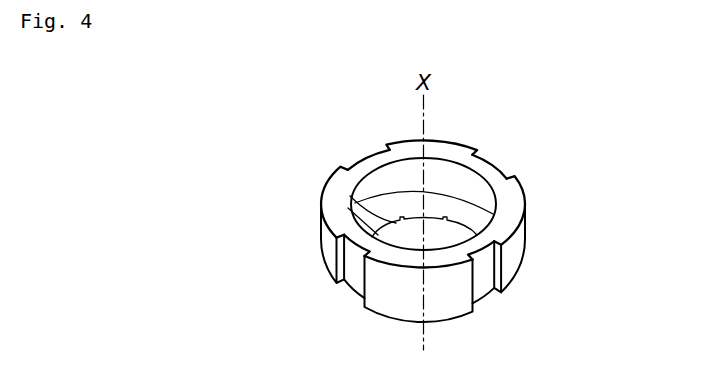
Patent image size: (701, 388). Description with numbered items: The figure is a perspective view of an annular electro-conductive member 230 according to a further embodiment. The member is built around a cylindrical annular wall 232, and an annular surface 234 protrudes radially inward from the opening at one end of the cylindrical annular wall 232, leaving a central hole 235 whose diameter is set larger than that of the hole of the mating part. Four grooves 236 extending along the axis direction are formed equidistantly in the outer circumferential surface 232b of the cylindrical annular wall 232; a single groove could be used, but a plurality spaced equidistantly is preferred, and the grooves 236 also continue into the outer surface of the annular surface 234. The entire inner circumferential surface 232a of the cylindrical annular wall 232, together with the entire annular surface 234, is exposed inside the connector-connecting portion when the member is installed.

The annular electro-conductive member 230 is at (411, 233).
The cylindrical annular wall 232 is at (508, 256).
The inner circumferential surface 232a is at (447, 167).
The outer circumferential surface 232b is at (383, 294).
The annular surface 234 is at (458, 201).
The hole 235 is at (387, 235).
The groove 236 is at (355, 260).